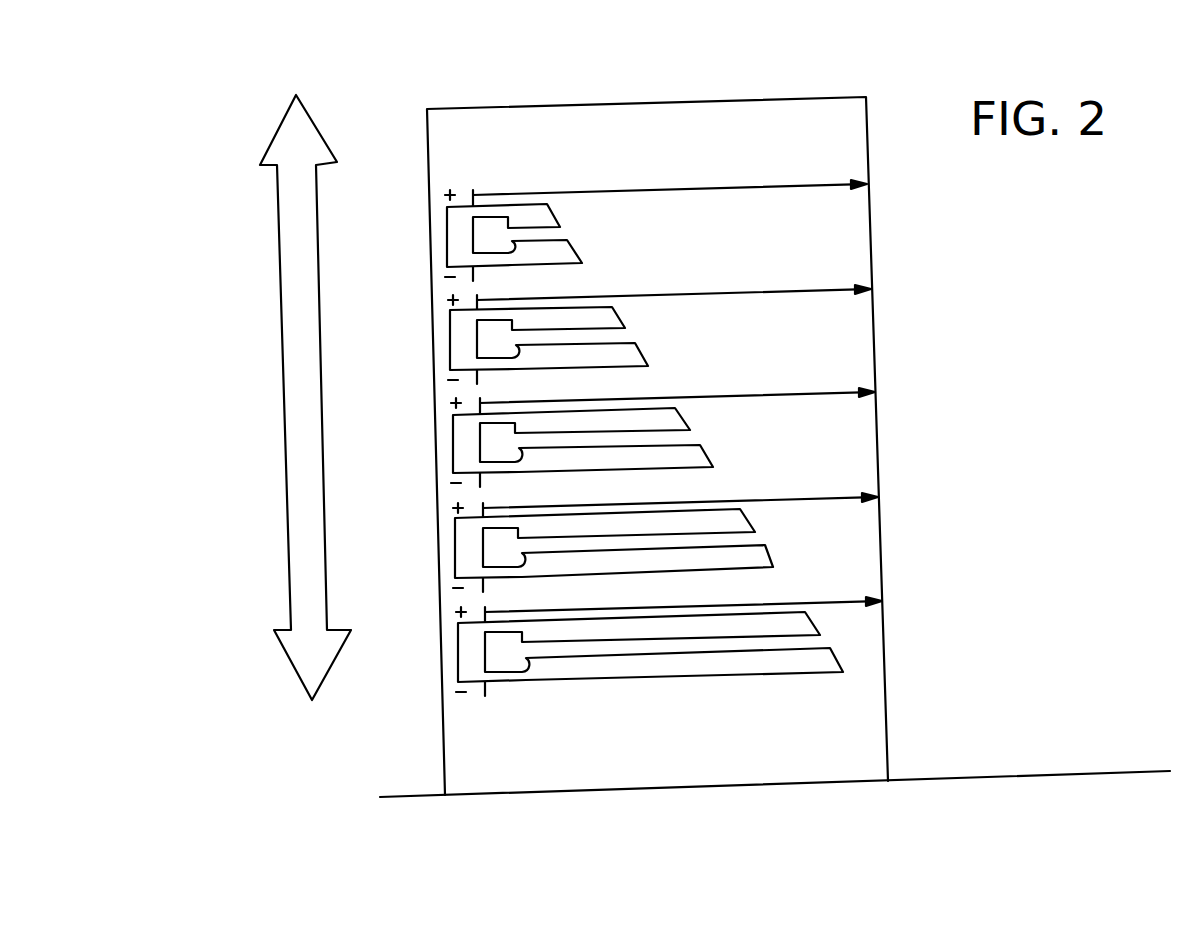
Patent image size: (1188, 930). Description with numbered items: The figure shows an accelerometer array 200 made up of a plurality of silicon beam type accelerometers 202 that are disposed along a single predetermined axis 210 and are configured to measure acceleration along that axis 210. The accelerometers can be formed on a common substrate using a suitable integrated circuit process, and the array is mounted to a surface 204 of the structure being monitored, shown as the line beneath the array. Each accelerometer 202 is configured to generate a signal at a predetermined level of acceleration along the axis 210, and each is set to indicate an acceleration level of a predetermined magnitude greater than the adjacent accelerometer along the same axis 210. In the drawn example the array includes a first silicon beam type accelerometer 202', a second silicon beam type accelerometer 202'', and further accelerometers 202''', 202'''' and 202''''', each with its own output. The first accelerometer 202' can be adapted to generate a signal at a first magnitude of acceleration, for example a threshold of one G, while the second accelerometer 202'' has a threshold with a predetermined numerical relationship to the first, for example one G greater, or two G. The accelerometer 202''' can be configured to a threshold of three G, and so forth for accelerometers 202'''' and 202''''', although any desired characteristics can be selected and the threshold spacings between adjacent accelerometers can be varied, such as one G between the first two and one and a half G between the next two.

The accelerometer array 200 is at (636, 90).
The silicon accelerometer 202 is at (644, 452).
The first silicon beam type accelerometer 202' is at (513, 243).
The second silicon beam type accelerometer 202'' is at (548, 347).
The third silicon beam type accelerometer 202''' is at (582, 451).
The fourth silicon beam type accelerometer 202'''' is at (613, 556).
The fifth silicon beam type accelerometer 202''''' is at (649, 660).
The surface 204 is at (972, 806).
The predetermined axis 210 is at (272, 424).